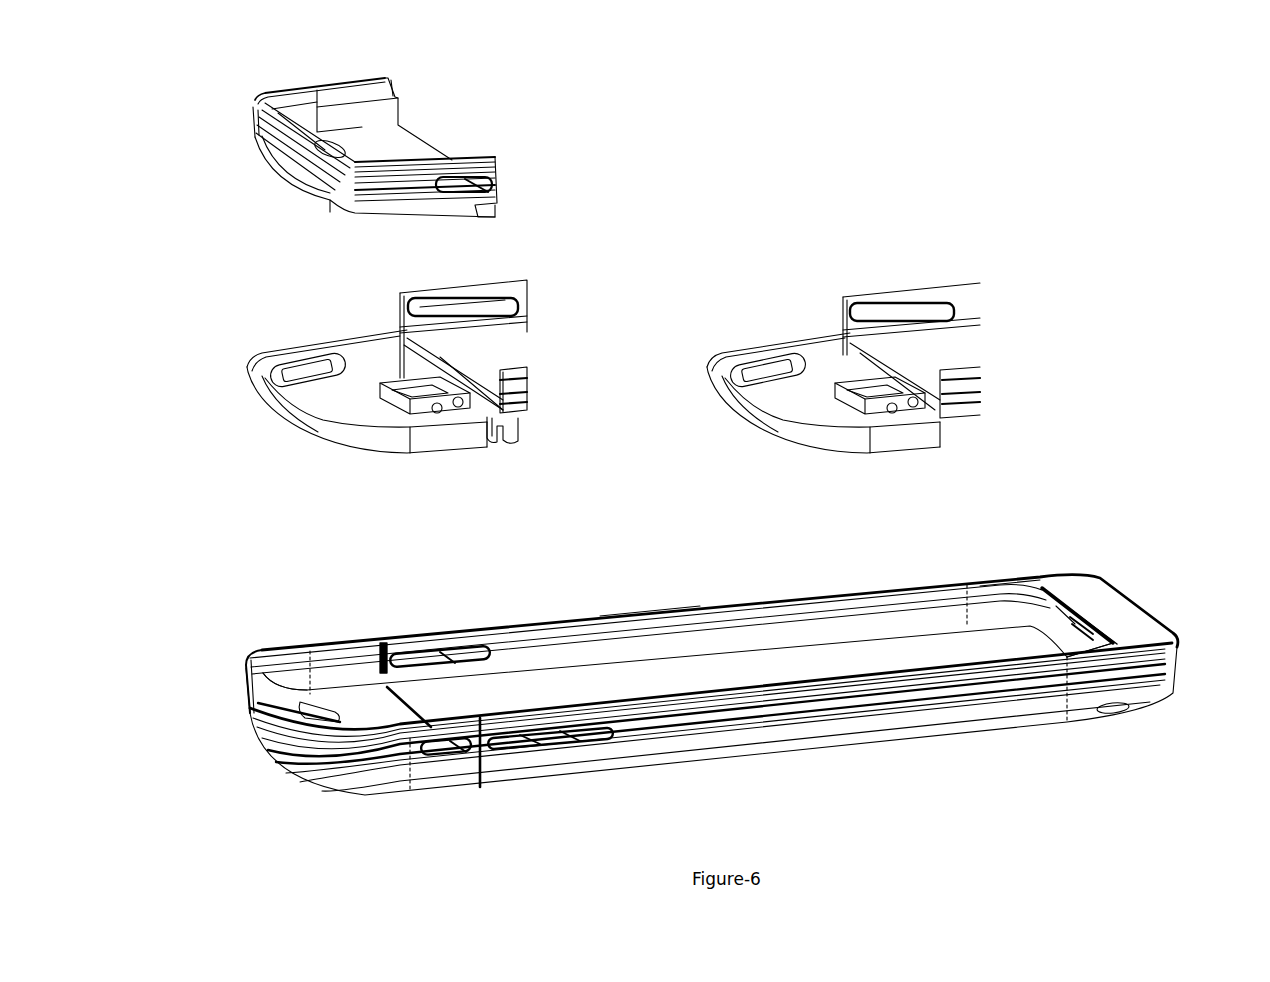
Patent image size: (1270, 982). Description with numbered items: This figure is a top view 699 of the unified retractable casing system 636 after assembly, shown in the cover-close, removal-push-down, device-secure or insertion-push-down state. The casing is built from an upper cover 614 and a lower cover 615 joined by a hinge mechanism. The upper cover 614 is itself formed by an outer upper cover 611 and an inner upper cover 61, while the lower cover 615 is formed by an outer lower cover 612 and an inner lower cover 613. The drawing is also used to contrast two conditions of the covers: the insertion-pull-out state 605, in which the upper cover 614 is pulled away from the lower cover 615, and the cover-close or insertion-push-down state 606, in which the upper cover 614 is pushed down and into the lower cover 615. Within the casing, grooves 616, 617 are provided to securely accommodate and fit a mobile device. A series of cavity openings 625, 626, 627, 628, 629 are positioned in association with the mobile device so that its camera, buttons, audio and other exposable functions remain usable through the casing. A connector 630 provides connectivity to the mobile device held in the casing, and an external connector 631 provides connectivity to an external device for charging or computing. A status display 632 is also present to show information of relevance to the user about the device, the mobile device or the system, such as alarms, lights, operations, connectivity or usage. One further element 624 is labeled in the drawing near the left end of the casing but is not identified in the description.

The outer upper cover 611 is at (402, 150).
The inner upper cover 61 is at (363, 383).
The outer lower cover 612 is at (512, 350).
The inner lower cover 613 is at (518, 432).
The insertion-pull-out state 605 is at (493, 450).
The cover-close or insertion-push-down state 606 is at (940, 433).
The top-view 699 is at (712, 707).
The lower cover 615 is at (597, 614).
The cavity opening 627 is at (416, 648).
The upper cover 614 is at (331, 648).
The groove 616 is at (283, 668).
The side wall 624 is at (272, 713).
The cavity opening 625 is at (432, 755).
The unified retractable casing system 636 is at (562, 794).
The cavity opening 626 is at (580, 760).
The groove 617 is at (1007, 605).
The cavity opening 628 is at (1048, 612).
The status display 632 is at (1080, 607).
The connector 630 is at (1113, 626).
The cavity opening 629 is at (1147, 597).
The external connector 631 is at (1120, 710).